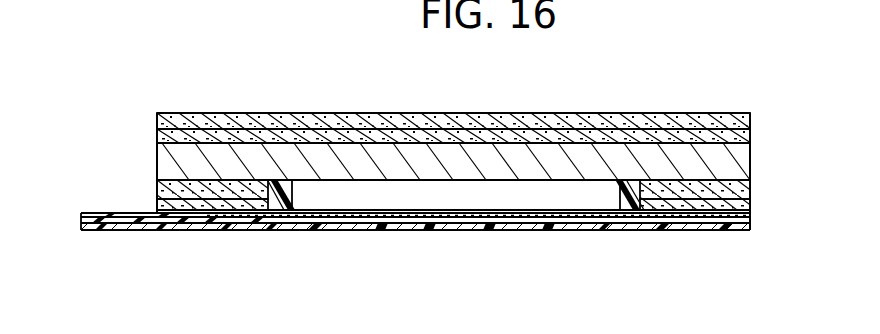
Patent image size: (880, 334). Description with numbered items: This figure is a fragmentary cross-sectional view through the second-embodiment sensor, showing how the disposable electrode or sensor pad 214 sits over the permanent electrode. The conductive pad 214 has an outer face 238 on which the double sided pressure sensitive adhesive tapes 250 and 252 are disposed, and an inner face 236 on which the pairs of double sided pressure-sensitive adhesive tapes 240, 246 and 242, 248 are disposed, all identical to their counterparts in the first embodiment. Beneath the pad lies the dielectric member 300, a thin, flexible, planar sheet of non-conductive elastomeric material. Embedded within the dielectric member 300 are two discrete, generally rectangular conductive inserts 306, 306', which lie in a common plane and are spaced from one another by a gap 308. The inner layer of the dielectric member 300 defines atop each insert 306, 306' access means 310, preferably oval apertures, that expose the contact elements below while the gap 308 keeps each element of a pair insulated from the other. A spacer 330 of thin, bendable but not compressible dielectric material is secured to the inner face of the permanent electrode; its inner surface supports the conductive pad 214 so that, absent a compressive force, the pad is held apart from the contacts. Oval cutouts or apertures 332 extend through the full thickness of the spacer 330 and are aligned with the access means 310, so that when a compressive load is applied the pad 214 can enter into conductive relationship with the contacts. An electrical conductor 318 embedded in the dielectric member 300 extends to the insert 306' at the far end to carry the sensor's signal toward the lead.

The double sided pressure sensitive adhesive tape 252 is at (752, 117).
The double sided pressure sensitive adhesive tape 250 is at (752, 135).
The outer face 238 is at (712, 147).
The inner face 236 is at (712, 174).
The double sided pressure-sensitive adhesive tape 242 is at (752, 188).
The double sided pressure-sensitive adhesive tape 248 is at (742, 201).
The double sided pressure-sensitive adhesive tape 240 is at (157, 191).
The double sided pressure-sensitive adhesive tape 246 is at (157, 208).
The spacer 330 is at (292, 197).
The oval cutout or aperture 332 is at (377, 197).
The access means 310 is at (480, 210).
The disposable electrode or sensor pad 214 is at (523, 158).
The electrical conductor 318 is at (147, 221).
The conductive insert 306 is at (415, 256).
The gap 308 is at (450, 231).
The conductive insert 306' is at (600, 256).
The dielectric member 300 is at (730, 232).